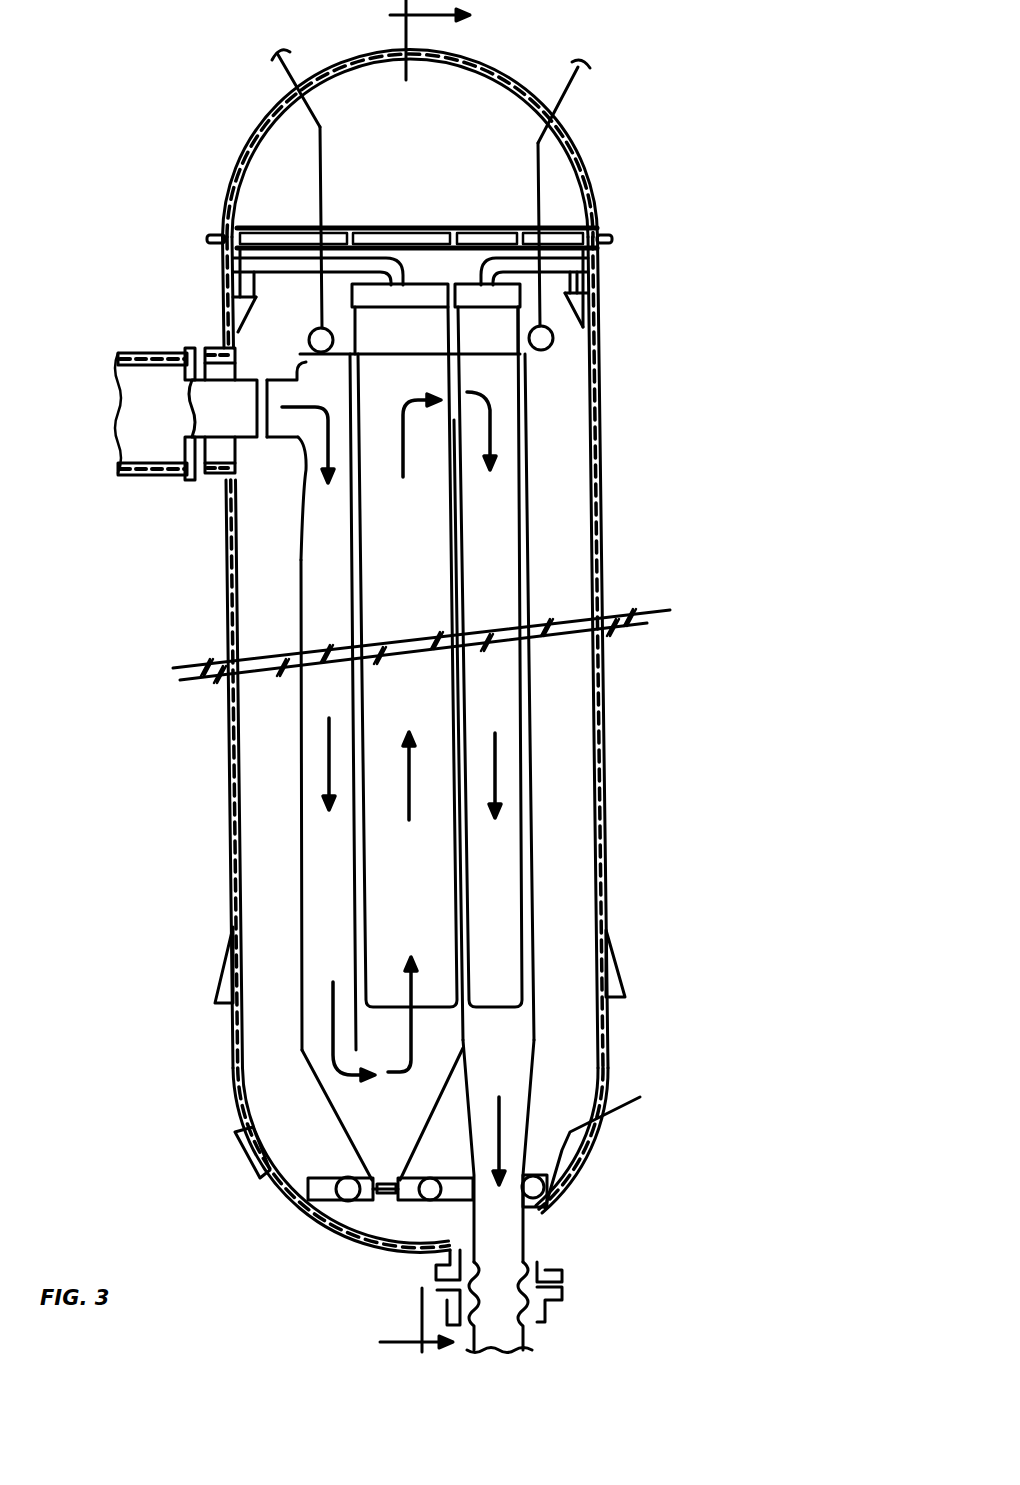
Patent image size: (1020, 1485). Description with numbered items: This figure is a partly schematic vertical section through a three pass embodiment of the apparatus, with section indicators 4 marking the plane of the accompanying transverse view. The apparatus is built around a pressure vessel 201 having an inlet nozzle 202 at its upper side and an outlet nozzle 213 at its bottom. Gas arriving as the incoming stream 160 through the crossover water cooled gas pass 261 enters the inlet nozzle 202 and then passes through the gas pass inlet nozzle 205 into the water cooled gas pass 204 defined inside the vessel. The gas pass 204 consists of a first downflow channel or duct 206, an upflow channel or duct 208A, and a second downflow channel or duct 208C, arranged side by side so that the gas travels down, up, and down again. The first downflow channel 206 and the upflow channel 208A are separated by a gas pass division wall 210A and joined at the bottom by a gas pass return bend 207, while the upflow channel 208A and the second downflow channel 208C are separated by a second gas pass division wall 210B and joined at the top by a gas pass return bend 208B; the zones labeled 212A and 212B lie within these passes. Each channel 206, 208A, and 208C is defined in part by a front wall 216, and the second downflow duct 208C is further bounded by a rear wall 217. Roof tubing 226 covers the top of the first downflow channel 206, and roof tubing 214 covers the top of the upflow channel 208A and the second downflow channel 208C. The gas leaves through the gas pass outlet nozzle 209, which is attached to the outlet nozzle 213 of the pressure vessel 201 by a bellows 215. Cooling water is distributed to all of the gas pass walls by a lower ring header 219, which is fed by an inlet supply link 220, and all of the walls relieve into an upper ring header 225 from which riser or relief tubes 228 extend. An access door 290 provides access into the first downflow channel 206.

The section line 4- 4 is at (434, 676).
The feed inlet 160 is at (148, 352).
The pressure vessel 201 is at (607, 749).
The inlet nozzle 202 is at (205, 484).
The water cooled gas pass 204 is at (318, 705).
The gas pass inlet nozzle 205 is at (298, 467).
The first downflow channel or duct 206 is at (302, 826).
The gas pass return bend 207 is at (380, 1088).
The upflow channel or duct 208A is at (428, 1030).
The gas pass return bend 208B is at (465, 382).
The second downflow channel or duct 208C is at (493, 1022).
The gas pass outlet nozzle 209 is at (503, 1222).
The gas pass division wall 210A is at (353, 890).
The gas pass division wall 210B is at (470, 930).
The left reactor tube 212A is at (432, 565).
The right reactor tube 212B is at (500, 518).
The outlet nozzle 213 is at (535, 1337).
The roof tubing 214 is at (414, 356).
The bellows 215 is at (472, 1268).
The front wall 216 is at (300, 898).
The rear wall 217 is at (531, 688).
The lower ring header 219 is at (340, 1210).
The inlet supply link 220 is at (652, 1075).
The upper ring header 225 is at (553, 340).
The roof tubing 226 is at (300, 360).
The riser or relief tubes 228 is at (288, 78).
The crossover water cooled gas pass 261 is at (207, 400).
The access door 290 is at (388, 1184).